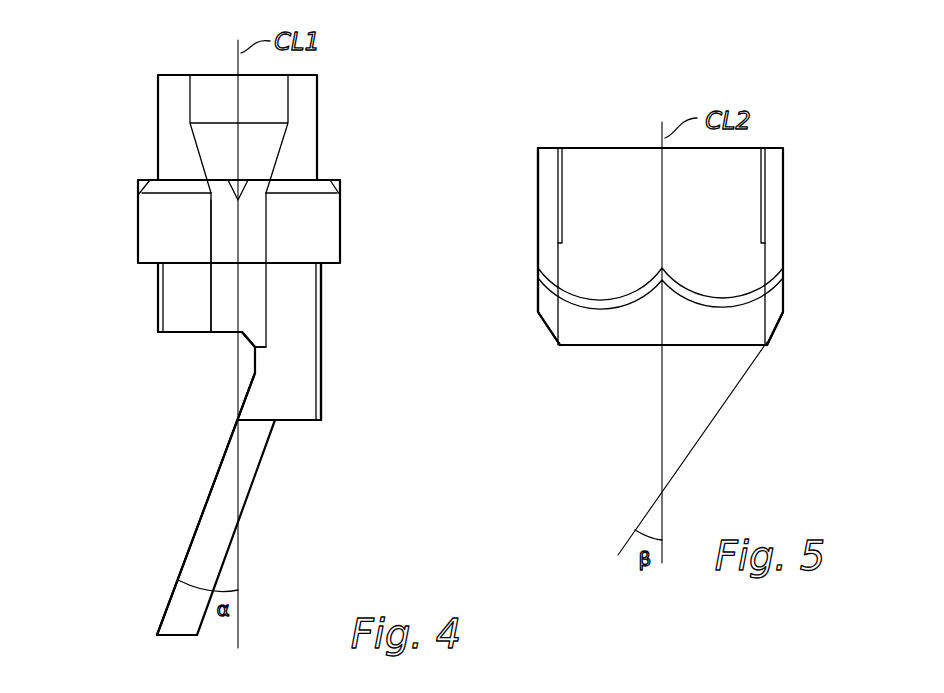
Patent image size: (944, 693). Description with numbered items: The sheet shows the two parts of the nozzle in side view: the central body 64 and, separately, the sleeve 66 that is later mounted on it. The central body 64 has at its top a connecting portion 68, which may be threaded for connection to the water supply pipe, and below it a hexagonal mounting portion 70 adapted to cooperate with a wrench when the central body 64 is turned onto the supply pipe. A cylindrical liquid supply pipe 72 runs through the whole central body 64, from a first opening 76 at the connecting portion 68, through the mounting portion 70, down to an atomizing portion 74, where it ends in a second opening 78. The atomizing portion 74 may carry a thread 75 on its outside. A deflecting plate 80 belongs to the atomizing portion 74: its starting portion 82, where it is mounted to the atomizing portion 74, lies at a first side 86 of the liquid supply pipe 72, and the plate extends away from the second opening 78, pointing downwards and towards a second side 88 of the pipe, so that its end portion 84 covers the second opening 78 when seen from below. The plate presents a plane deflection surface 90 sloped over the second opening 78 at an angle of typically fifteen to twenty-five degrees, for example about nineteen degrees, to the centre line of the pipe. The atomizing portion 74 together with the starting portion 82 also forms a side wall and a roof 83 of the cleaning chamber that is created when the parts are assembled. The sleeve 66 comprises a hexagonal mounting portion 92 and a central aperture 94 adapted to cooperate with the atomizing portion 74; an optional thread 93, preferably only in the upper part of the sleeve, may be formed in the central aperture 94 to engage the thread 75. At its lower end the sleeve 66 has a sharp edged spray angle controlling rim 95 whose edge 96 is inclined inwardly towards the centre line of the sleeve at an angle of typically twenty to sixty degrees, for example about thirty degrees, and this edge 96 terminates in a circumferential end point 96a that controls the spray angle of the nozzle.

In FIG. 4, the central body 64 is at (104, 390).
In FIG. 4, the connecting portion 68 is at (307, 140).
In FIG. 4, the hexagonal mounting portion 70 is at (317, 225).
In FIG. 4, the liquid supply pipe 72 is at (212, 283).
In FIG. 4, the atomizing portion 74 is at (310, 373).
In FIG. 4, the thread 75 is at (321, 293).
In FIG. 4, the first opening 76 is at (200, 74).
In FIG. 4, the second opening 78 is at (220, 333).
In FIG. 4, the deflecting plate 80 is at (197, 557).
In FIG. 4, the starting portion 82 is at (270, 377).
In FIG. 4, the roof 83 is at (177, 333).
In FIG. 4, the end portion 84 is at (175, 625).
In FIG. 4, the first side 86 is at (262, 308).
In FIG. 4, the second side 88 is at (212, 318).
In FIG. 4, the deflection surface 90 is at (198, 515).
In FIG. 5, the sleeve 66 is at (577, 418).
In FIG. 5, the hexagonal mounting portion 92 is at (548, 197).
In FIG. 5, the thread 93 is at (765, 178).
In FIG. 5, the central aperture 94 is at (760, 200).
In FIG. 5, the spray angle controlling rim 95 is at (545, 332).
In FIG. 5, the edge 96 is at (776, 332).
In FIG. 5, the circumferential end point 96a is at (557, 347).